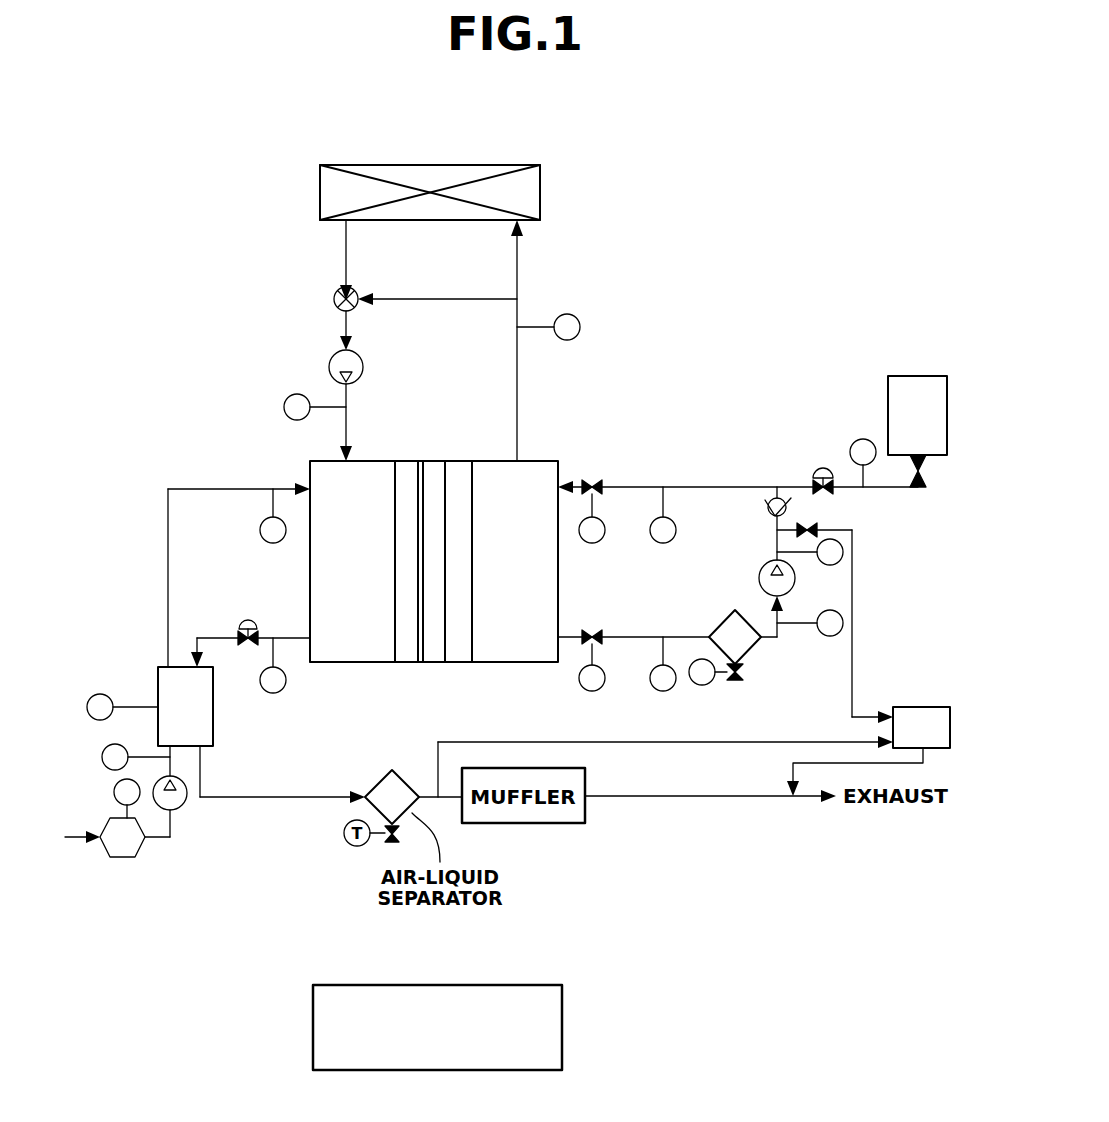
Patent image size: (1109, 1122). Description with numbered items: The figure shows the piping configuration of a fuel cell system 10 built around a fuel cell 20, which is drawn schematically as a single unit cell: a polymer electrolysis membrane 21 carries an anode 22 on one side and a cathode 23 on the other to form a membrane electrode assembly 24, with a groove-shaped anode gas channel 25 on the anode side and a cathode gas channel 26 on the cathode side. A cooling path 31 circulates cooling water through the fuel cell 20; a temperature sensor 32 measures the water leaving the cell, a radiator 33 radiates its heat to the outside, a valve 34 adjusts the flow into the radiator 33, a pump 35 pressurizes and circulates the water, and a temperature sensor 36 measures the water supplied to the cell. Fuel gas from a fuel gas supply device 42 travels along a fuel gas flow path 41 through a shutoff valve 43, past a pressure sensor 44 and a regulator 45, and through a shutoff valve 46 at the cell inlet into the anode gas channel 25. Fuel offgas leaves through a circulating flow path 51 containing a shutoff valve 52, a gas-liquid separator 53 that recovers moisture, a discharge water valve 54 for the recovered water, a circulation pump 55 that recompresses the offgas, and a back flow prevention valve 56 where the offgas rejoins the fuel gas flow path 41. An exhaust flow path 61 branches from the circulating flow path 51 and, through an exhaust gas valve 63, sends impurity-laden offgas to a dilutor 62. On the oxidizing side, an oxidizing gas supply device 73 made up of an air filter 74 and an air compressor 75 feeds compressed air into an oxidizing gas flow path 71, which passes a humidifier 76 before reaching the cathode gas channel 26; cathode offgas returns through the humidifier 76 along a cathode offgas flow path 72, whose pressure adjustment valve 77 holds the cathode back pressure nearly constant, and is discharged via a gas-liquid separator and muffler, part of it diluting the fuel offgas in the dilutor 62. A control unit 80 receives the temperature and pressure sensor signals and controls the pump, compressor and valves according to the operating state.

The fuel cell system 10 is at (715, 228).
The fuel cell 20 is at (310, 472).
The polymer electrolysis membrane 21 is at (435, 664).
The anode 22 is at (462, 664).
The cathode 23 is at (407, 664).
The membrane electrode assembly 24 is at (497, 716).
The anode gas channel 25 is at (538, 664).
The cathode gas channel 26 is at (333, 664).
The cooling path 31 is at (517, 388).
The temperature sensor 32 is at (581, 327).
The radiator 33 is at (480, 165).
The valve 34 is at (334, 299).
The pump 35 is at (329, 367).
The temperature sensor 36 is at (284, 407).
The fuel gas flow path 41 is at (740, 487).
The fuel gas supply device 42 is at (918, 376).
The shutoff valve 43 is at (920, 490).
The pressure sensor 44 is at (866, 439).
The regulator 45 is at (824, 466).
The shutoff valve 46 is at (592, 480).
The circulating flow path 51 is at (630, 640).
The shutoff valve 52 is at (592, 630).
The gas-liquid separator 53 is at (722, 614).
The discharge water valve 54 is at (745, 673).
The circulation pump 55 is at (766, 565).
The back flow prevention valve 56 is at (768, 508).
The exhaust flow path 61 is at (852, 574).
The dilutor 62 is at (923, 707).
The exhaust gas valve 63 is at (802, 522).
The oxidizing gas flow path 71 is at (186, 489).
The cathode offgas flow path 72 is at (288, 638).
The oxidizing gas supply device 73 is at (200, 920).
The air filter 74 is at (122, 858).
The air compressor 75 is at (184, 808).
The humidifier 76 is at (158, 672).
The pressure adjustment valve 77 is at (248, 618).
The control unit 80 is at (562, 1022).